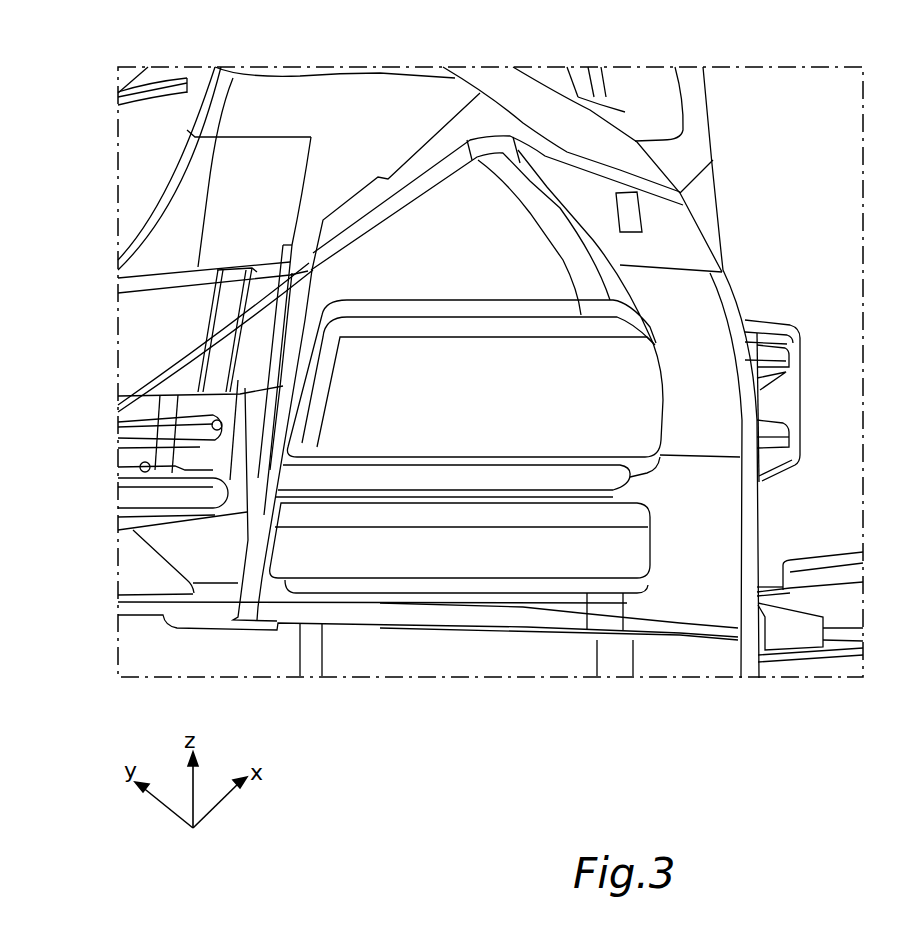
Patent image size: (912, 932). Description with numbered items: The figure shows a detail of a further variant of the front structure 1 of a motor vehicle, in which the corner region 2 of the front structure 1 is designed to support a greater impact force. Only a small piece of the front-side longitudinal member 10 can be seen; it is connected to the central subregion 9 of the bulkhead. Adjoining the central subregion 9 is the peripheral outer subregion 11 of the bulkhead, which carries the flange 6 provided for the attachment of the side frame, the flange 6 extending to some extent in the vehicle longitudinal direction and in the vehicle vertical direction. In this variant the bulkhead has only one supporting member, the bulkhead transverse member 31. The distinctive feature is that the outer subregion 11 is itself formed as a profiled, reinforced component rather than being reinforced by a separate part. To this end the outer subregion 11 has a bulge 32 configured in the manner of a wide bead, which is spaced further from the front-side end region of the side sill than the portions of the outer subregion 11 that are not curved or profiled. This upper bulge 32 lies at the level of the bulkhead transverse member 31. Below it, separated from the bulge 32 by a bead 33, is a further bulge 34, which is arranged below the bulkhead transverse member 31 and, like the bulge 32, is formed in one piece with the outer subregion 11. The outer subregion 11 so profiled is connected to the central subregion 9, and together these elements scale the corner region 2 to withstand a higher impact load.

The front structure 1 is at (83, 68).
The corner region 2 is at (460, 656).
The flange 6 is at (748, 522).
The central subregion 9 is at (373, 117).
The front-side longitudinal member 10 is at (148, 337).
The outer subregion 11 is at (467, 212).
The bulkhead transverse member 31 is at (775, 398).
The bulge 32 is at (513, 370).
The bead 33 is at (424, 478).
The further bulge 34 is at (524, 570).